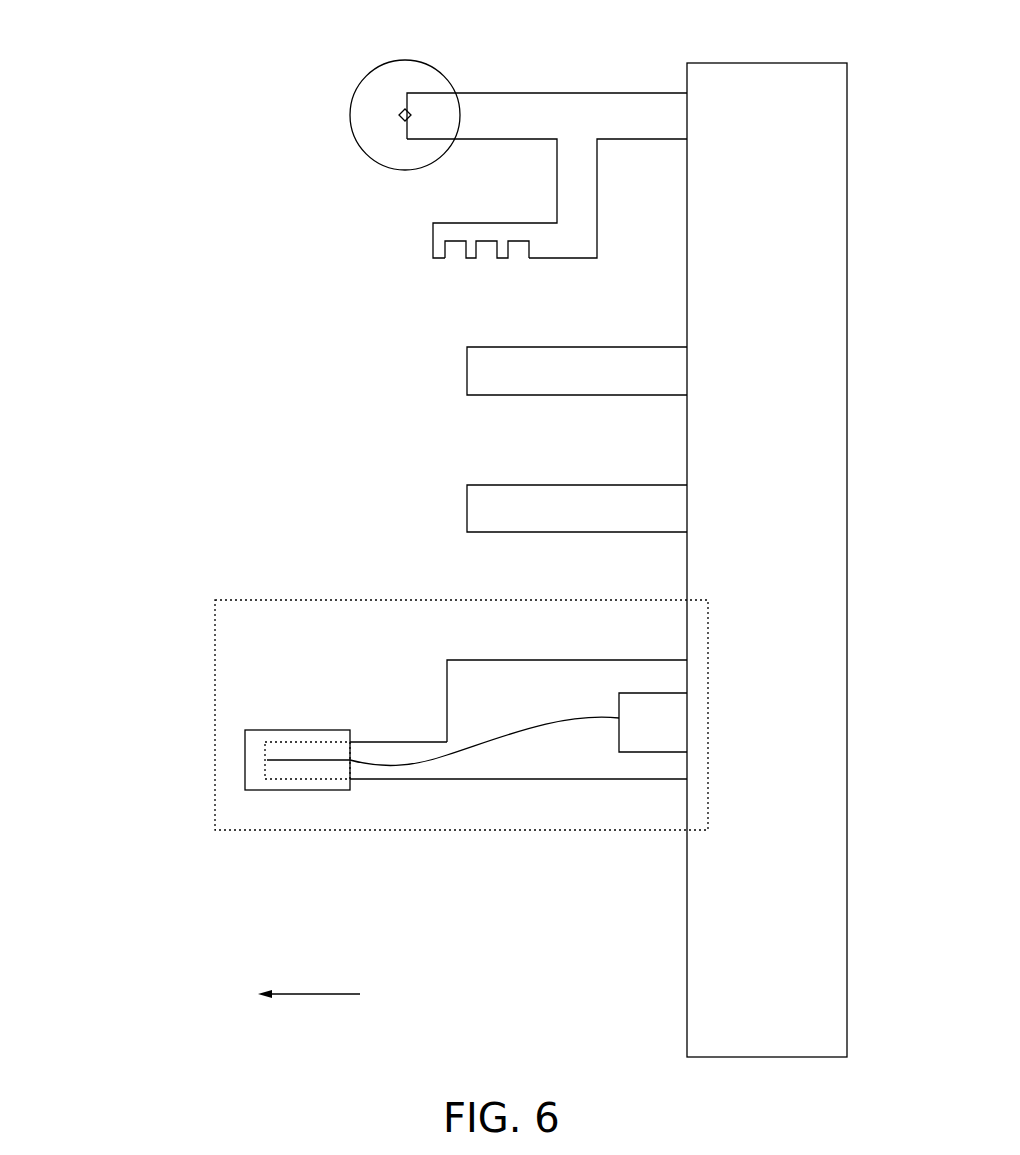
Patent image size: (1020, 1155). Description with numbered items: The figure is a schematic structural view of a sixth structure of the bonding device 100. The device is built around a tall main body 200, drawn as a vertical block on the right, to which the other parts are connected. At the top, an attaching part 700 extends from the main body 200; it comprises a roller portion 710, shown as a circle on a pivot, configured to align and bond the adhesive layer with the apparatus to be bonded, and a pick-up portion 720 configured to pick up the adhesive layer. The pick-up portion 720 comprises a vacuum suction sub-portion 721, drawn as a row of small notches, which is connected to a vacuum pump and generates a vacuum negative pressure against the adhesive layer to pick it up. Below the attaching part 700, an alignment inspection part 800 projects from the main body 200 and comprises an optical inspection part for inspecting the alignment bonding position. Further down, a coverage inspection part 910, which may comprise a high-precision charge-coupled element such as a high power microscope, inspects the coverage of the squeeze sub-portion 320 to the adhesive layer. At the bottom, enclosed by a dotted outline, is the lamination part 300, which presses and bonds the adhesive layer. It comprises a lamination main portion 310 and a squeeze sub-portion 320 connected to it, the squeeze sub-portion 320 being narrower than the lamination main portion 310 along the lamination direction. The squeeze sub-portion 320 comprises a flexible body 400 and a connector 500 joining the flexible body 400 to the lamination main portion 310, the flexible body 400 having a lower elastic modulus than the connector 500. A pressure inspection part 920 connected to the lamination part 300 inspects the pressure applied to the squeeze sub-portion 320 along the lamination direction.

The bonding device 100 is at (166, 47).
The main body 200 is at (828, 275).
The lamination part 300 is at (215, 600).
The lamination main portion 310 is at (573, 763).
The squeeze sub-portion 320 is at (362, 884).
The flexible body 400 is at (285, 785).
The connector 500 is at (427, 772).
The attaching part 700 is at (283, 128).
The roller portion 710 is at (383, 140).
The pick-up portion 720 is at (489, 219).
The vacuum suction sub-portion 721 is at (490, 245).
The alignment inspection part 800 is at (668, 373).
The coverage inspection part 910 is at (665, 510).
The pressure inspection part 920 is at (667, 725).